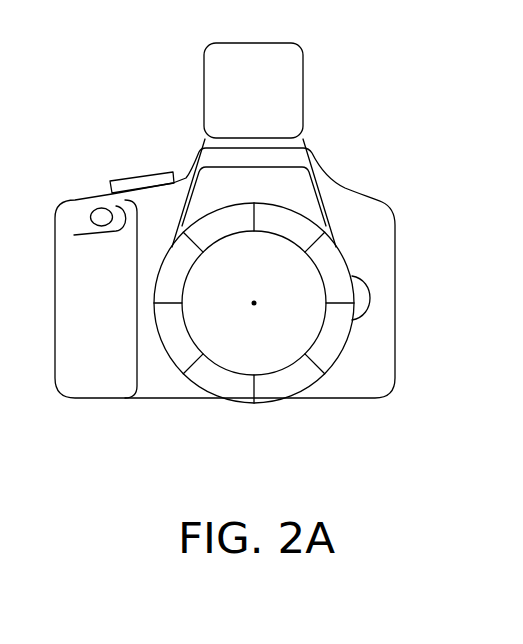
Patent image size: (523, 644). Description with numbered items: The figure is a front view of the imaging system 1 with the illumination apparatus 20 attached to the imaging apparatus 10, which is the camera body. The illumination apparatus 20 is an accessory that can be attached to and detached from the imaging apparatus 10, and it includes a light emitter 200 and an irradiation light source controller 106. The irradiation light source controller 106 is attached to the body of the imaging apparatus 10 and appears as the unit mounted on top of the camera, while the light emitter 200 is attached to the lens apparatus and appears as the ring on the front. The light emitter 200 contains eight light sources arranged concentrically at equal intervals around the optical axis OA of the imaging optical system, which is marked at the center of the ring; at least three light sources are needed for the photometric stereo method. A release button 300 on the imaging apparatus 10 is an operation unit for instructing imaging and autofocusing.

The imaging system 1 is at (419, 33).
The imaging apparatus 10 is at (400, 157).
The illumination apparatus 20 is at (318, 97).
The irradiation light source controller 106 is at (235, 60).
The light emitter 200 is at (290, 386).
The release button 300 is at (95, 212).
The optical axis OA is at (256, 288).